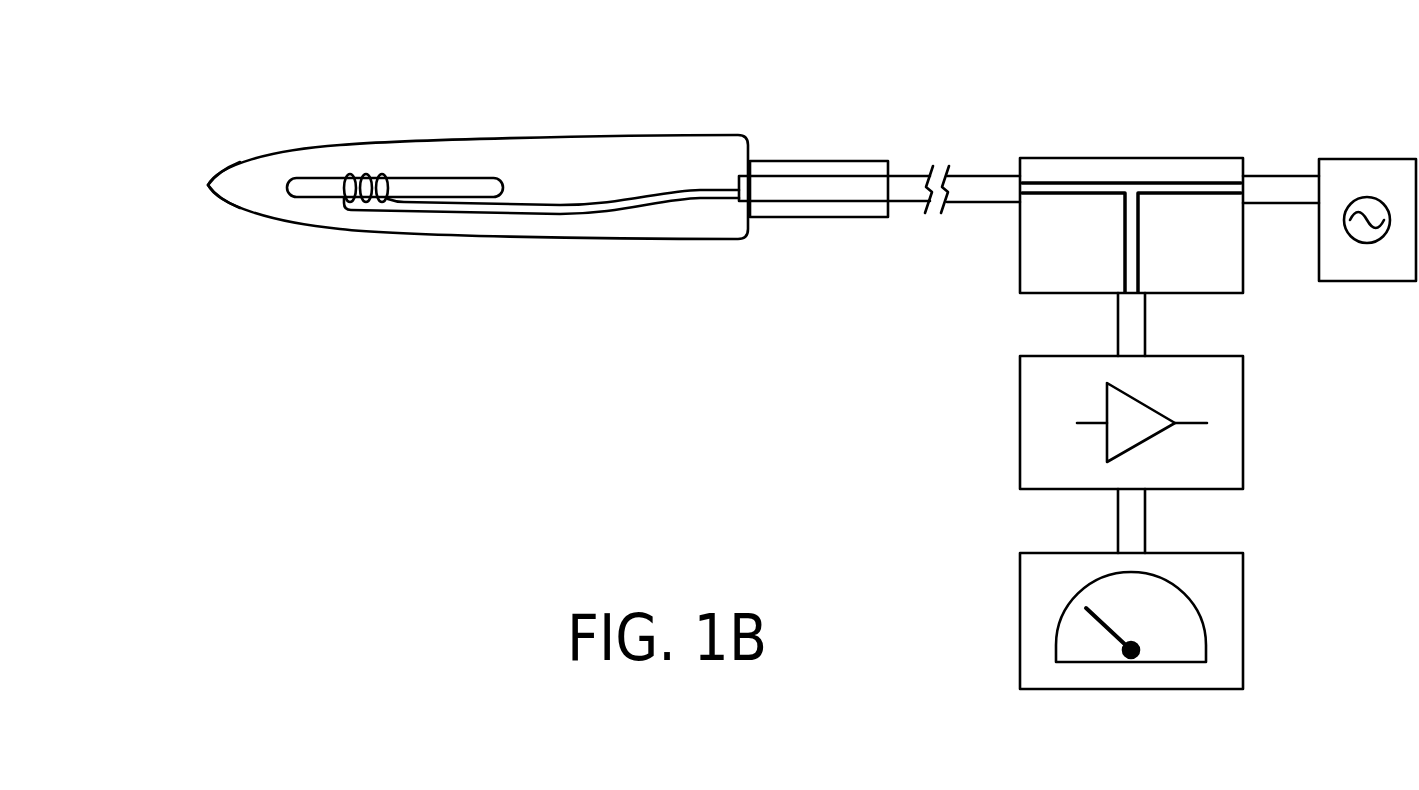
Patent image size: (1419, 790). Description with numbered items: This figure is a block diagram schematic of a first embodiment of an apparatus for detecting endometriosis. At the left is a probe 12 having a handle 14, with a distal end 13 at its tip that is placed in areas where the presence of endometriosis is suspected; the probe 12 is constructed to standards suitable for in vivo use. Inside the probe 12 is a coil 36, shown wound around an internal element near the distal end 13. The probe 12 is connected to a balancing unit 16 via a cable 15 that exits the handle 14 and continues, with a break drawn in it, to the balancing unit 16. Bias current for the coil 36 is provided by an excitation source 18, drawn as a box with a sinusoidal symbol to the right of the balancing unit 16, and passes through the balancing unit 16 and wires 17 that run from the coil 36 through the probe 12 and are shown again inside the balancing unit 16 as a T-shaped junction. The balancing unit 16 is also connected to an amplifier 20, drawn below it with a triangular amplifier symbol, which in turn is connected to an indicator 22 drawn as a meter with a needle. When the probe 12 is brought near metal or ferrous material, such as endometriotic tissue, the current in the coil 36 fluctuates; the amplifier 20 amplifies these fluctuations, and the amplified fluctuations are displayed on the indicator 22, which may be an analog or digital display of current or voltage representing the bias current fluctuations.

The probe 12 is at (578, 135).
The distal end 13 is at (206, 186).
The handle 14 is at (828, 161).
The cable 15 is at (912, 203).
The balancing unit 16 is at (1135, 158).
The wires 17 is at (673, 212).
The excitation source 18 is at (1367, 159).
The amplifier 20 is at (1020, 440).
The indicator 22 is at (1020, 632).
The coil 36 is at (364, 173).